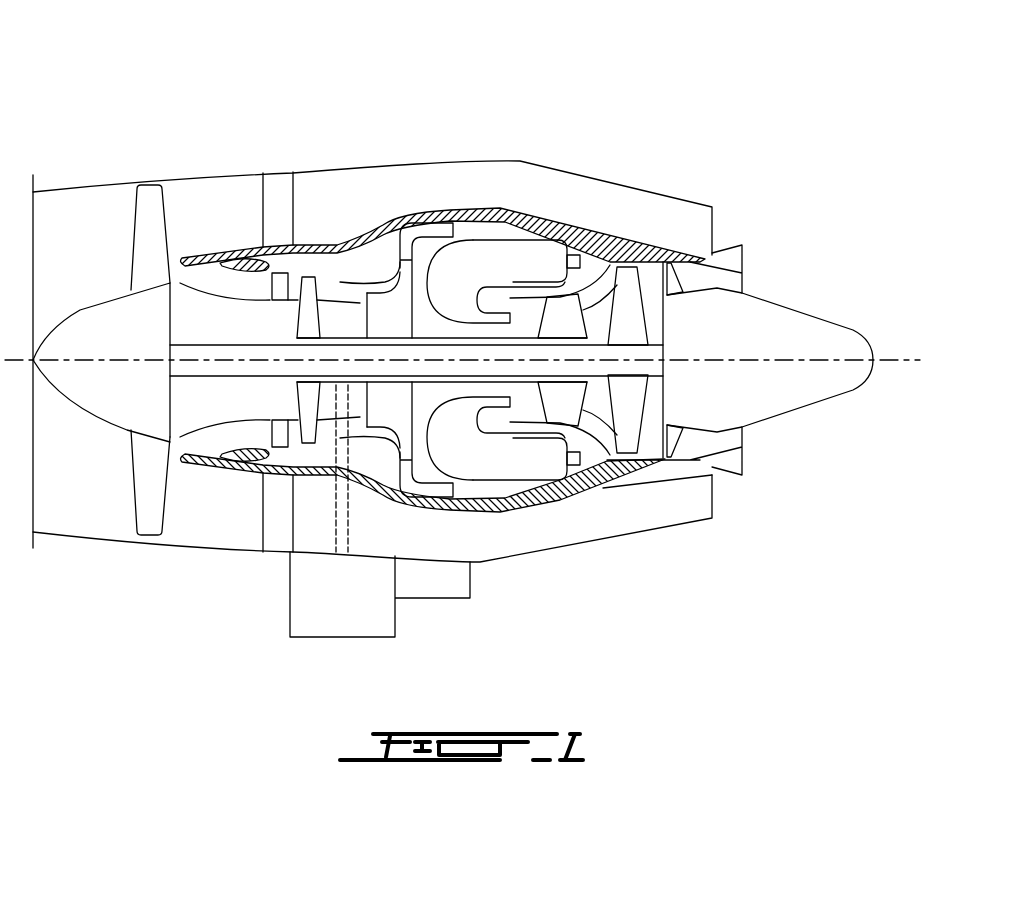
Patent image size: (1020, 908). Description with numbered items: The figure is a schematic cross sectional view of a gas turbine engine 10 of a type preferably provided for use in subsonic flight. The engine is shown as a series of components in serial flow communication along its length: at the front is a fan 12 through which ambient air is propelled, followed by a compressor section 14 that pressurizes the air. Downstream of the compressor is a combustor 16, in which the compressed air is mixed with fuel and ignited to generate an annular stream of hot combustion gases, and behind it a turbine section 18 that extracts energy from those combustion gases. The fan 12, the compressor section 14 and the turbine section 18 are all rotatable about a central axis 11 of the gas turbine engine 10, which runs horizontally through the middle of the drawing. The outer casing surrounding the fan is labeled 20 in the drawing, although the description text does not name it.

The gas turbine engine 10 is at (465, 324).
The central axis 11 is at (903, 357).
The fan 12 is at (147, 477).
The compressor section 14 is at (335, 287).
The combustor 16 is at (500, 255).
The turbine section 18 is at (595, 413).
The nacelle / fan case 20 is at (81, 308).